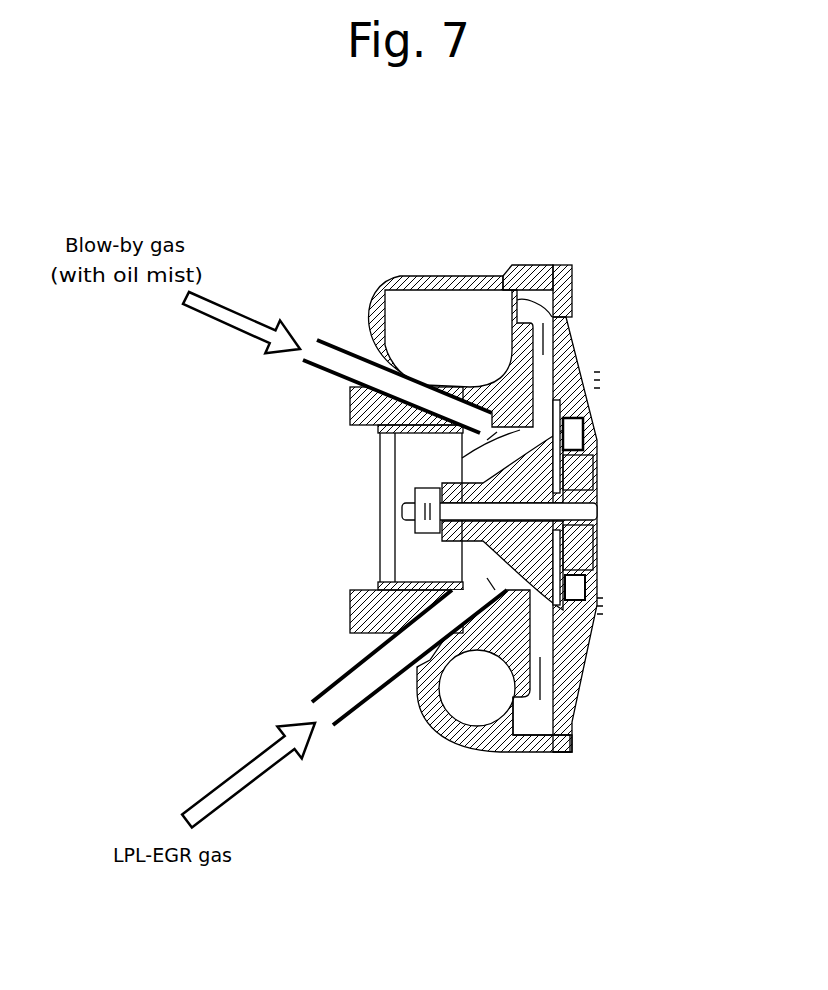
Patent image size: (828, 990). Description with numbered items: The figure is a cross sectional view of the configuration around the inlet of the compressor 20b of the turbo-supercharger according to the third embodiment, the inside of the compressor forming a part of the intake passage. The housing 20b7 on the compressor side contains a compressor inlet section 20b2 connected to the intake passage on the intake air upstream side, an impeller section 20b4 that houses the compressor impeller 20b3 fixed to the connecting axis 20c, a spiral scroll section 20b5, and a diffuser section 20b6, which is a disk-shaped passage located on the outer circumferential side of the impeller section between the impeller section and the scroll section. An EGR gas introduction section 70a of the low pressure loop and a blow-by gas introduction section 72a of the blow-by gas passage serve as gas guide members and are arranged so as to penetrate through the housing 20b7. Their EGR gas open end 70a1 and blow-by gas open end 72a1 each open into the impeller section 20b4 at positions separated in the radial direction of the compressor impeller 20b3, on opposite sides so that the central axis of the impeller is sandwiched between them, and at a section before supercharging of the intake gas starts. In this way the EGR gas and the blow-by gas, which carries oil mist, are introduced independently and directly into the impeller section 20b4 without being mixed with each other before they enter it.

The compressor 20b is at (491, 245).
The compressor inlet section 20b2 is at (347, 613).
The compressor impeller 20b3 is at (563, 440).
The impeller section 20b4 is at (573, 595).
The scroll section 20b5 is at (427, 307).
The diffuser section 20b6 is at (577, 313).
The housing 20b7 is at (523, 263).
The connecting axis 20c is at (587, 510).
The EGR gas introduction section 70a is at (352, 700).
The EGR gas open end 70a1 is at (487, 578).
The blow-by gas introduction section 72a is at (333, 365).
The blow-by gas open end 72a1 is at (505, 437).